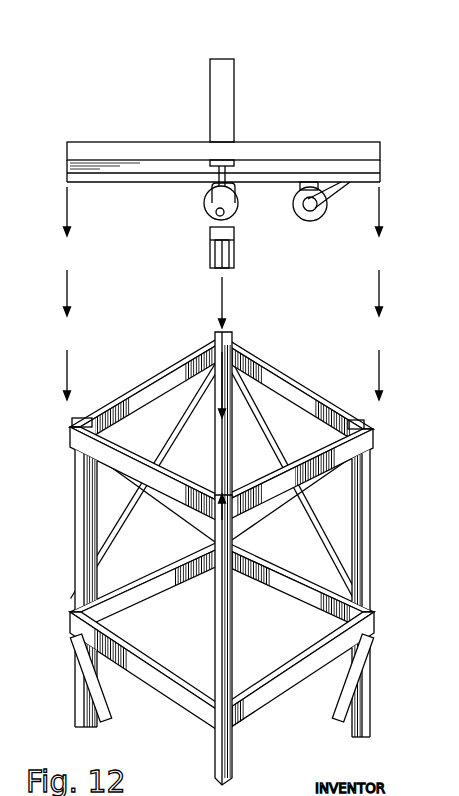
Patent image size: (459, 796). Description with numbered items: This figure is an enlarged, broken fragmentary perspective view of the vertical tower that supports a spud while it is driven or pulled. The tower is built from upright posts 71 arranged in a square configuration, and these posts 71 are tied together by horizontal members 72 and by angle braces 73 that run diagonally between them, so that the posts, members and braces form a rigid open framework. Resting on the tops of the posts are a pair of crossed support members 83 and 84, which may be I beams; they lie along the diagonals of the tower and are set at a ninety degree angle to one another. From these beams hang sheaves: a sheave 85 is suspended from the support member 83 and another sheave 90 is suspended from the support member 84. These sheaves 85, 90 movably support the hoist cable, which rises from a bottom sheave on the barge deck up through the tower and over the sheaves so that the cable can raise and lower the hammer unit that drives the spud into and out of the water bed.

The post 71 is at (232, 340).
The horizontal member 72 is at (153, 380).
The angle brace 73 is at (184, 422).
The support member 83 is at (210, 252).
The support member 84 is at (281, 148).
The sheave 85 is at (206, 206).
The sheave 90 is at (323, 212).